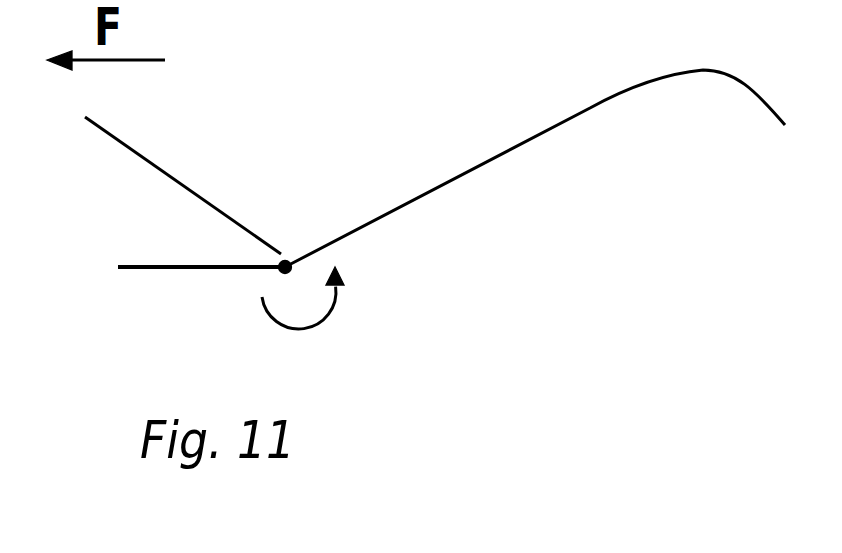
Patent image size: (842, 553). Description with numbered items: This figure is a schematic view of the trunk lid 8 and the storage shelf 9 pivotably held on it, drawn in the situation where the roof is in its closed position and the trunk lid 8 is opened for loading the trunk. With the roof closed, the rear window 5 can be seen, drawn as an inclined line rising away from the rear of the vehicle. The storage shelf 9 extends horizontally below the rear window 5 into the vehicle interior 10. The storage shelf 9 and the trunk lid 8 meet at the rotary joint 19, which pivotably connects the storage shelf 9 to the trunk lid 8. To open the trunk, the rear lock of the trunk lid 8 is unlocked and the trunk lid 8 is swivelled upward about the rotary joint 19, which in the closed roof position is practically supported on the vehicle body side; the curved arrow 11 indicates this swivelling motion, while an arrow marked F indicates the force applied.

The rear window 5 is at (183, 183).
The trunk lid 8 is at (495, 157).
The storage shelf 9 is at (145, 264).
The vehicle interior 10 is at (74, 247).
The pivoting direction 11 is at (386, 352).
The rotary joint 19 is at (288, 262).